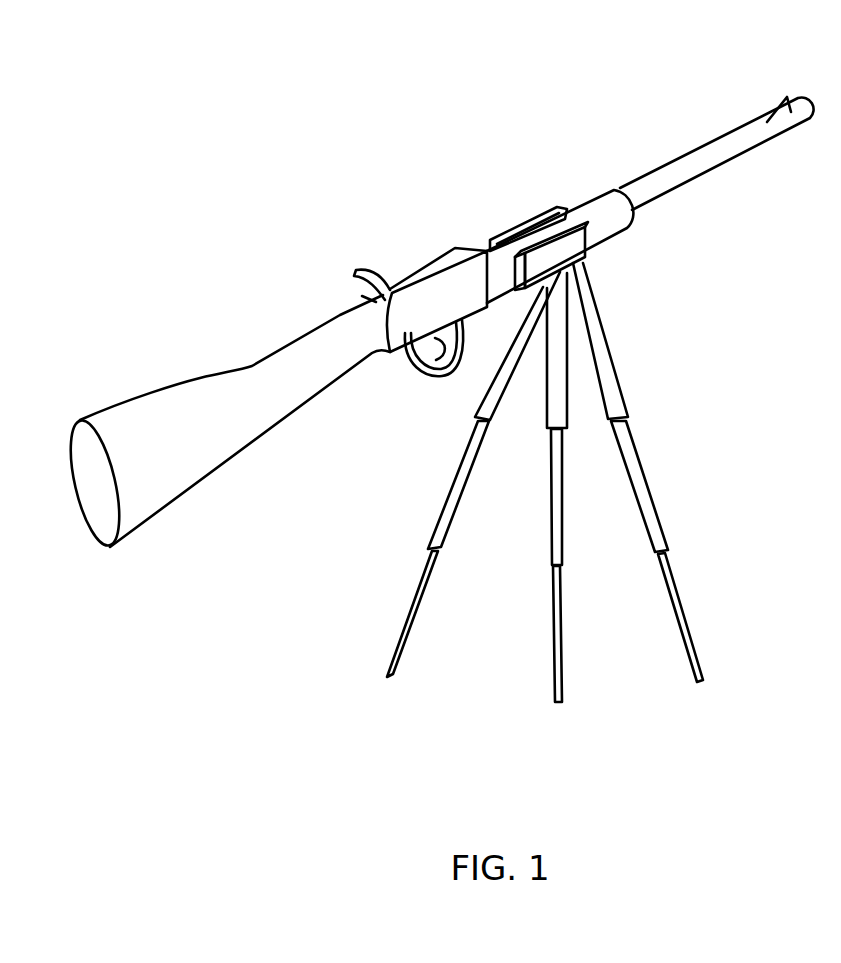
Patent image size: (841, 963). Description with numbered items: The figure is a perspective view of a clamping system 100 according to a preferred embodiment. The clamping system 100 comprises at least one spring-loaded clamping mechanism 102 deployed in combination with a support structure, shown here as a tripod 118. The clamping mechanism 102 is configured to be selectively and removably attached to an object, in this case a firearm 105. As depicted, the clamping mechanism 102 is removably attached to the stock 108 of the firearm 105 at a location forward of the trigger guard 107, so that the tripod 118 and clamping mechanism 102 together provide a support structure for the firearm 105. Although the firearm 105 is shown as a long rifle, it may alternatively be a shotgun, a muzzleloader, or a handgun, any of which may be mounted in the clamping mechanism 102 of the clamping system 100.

The clamping system 100 is at (128, 70).
The spring-loaded clamping mechanism 102 is at (592, 260).
The firearm 105 is at (156, 336).
The trigger guard 107 is at (445, 378).
The stock 108 is at (560, 212).
The tripod 118 is at (646, 358).